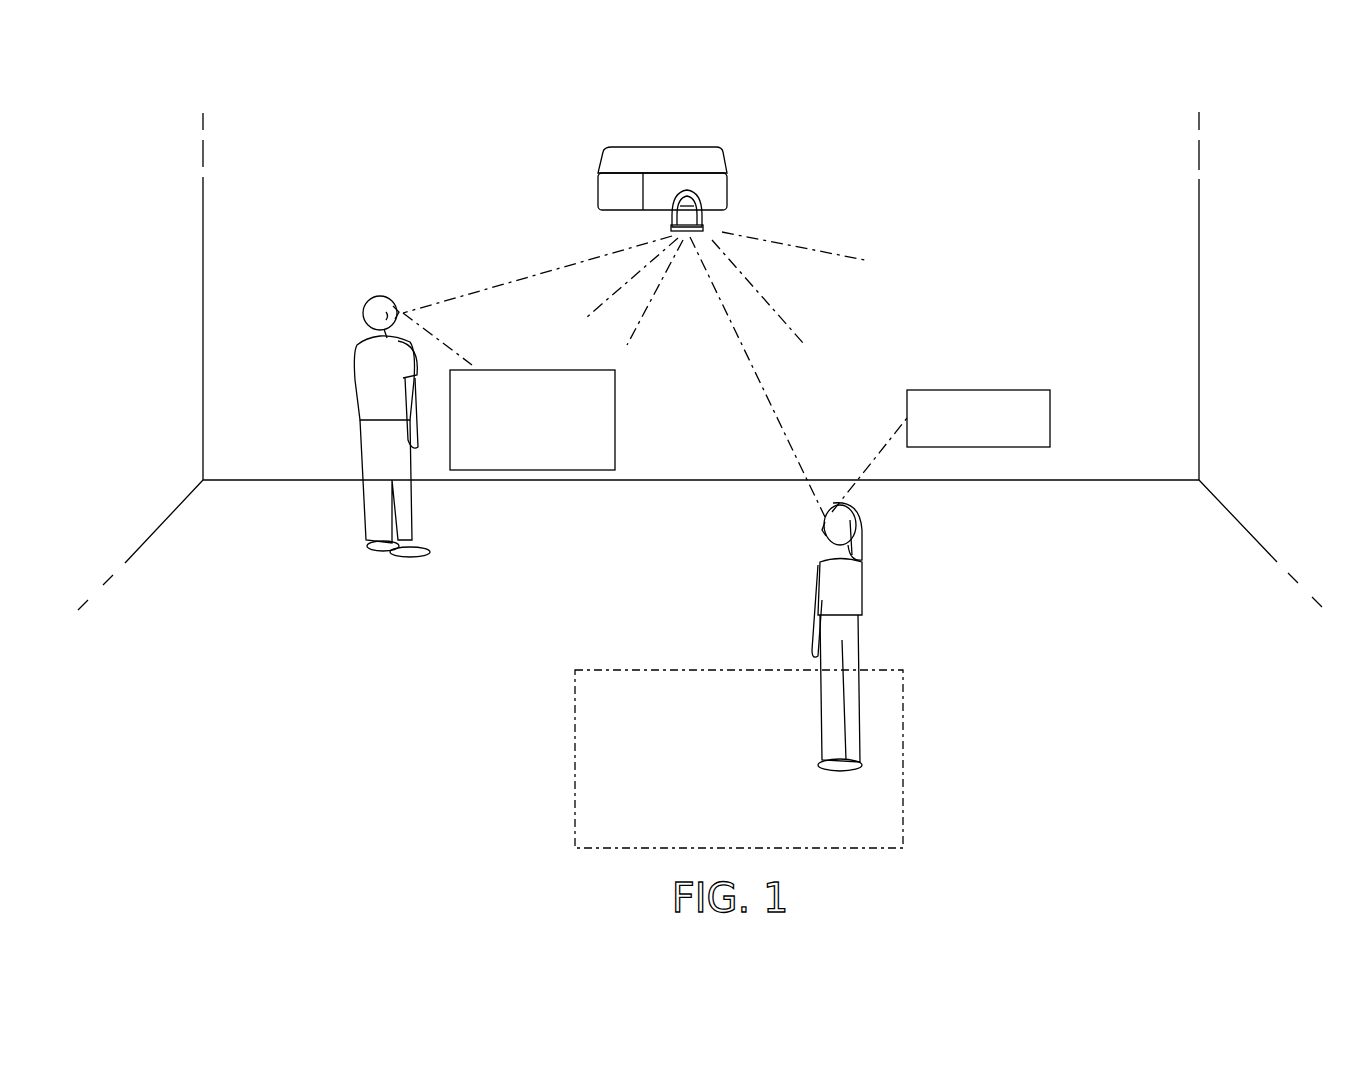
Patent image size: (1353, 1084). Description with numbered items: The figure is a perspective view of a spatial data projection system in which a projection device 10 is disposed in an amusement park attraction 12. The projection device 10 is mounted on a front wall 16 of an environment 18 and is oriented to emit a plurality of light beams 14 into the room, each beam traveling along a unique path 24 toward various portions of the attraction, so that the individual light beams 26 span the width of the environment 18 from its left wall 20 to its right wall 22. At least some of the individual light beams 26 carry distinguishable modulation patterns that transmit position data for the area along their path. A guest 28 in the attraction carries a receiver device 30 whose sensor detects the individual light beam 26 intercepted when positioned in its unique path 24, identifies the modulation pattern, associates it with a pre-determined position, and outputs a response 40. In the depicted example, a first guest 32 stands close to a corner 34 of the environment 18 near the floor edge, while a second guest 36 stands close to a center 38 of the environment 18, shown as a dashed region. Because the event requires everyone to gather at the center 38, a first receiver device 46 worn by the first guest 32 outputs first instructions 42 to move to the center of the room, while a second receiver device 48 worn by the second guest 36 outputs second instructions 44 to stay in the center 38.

The projection device 10 is at (730, 187).
The amusement park attraction 12 is at (1030, 233).
The plurality of light beams 14 is at (578, 257).
The front wall 16 is at (345, 183).
The environment 18 is at (330, 313).
The left wall 20 is at (181, 230).
The right wall 22 is at (1232, 266).
The unique path 24 is at (667, 343).
The individual light beam 26 is at (503, 283).
The guest 28 is at (652, 501).
The receiver device 30 is at (641, 390).
The first guest 32 is at (356, 416).
The corner 34 is at (240, 517).
The second guest 36 is at (882, 592).
The center 38 is at (575, 767).
The response 40 is at (769, 413).
The first instructions 42 is at (615, 418).
The second instructions 44 is at (978, 390).
The first receiver device 46 is at (393, 314).
The second receiver device 48 is at (825, 518).